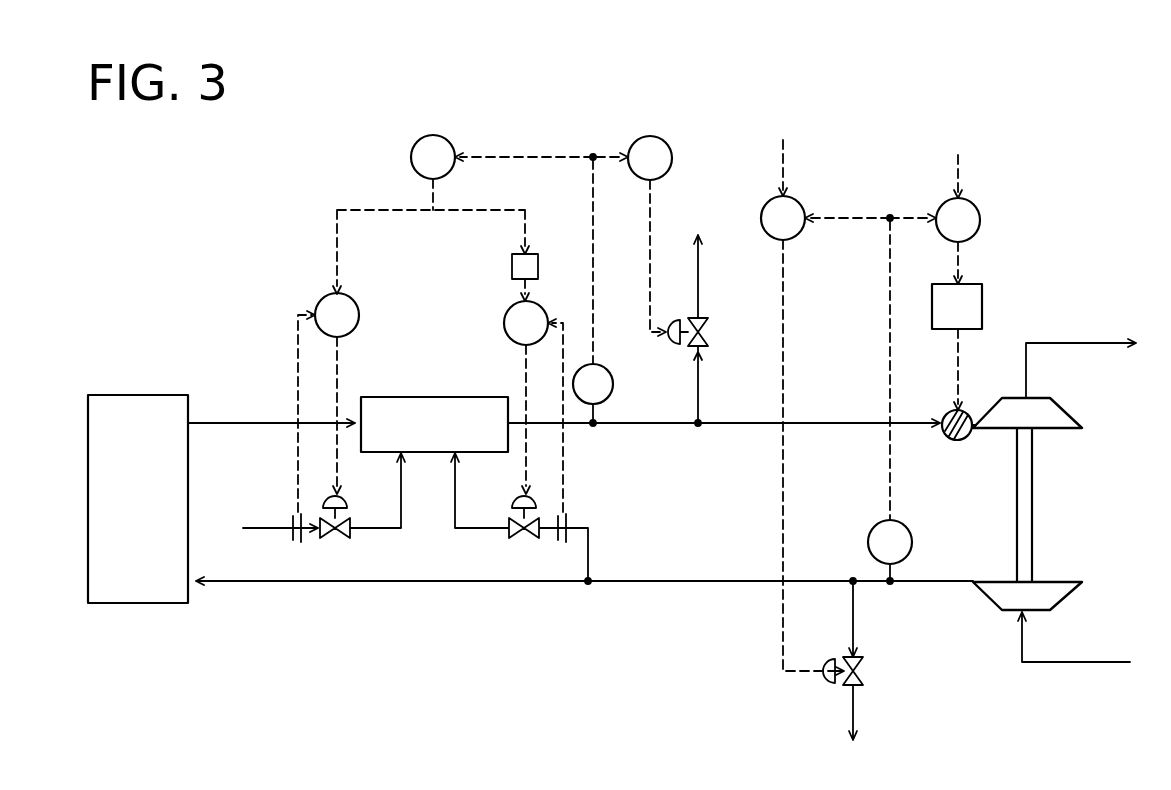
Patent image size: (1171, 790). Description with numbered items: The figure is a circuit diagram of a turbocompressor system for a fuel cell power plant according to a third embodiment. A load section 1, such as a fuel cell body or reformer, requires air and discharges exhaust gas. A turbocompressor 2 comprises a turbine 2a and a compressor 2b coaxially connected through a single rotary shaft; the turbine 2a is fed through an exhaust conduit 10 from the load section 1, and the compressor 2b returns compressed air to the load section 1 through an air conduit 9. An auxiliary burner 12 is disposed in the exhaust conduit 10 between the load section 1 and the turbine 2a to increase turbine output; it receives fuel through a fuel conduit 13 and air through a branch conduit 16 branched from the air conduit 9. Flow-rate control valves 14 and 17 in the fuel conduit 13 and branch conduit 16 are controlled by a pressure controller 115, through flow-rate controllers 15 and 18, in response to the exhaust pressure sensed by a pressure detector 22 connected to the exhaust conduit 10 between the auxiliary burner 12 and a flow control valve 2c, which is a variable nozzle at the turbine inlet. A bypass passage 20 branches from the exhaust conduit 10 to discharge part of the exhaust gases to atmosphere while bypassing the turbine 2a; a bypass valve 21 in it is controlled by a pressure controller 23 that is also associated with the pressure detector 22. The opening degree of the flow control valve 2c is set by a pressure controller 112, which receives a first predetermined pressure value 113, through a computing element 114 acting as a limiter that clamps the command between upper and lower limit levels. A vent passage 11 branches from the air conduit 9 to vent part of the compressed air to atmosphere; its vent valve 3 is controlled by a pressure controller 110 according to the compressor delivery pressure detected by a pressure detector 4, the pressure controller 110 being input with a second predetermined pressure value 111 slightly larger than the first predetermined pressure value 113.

The load section 1 is at (130, 604).
The turbocompressor 2 is at (1056, 510).
The turbine 2a is at (1068, 410).
The compressor 2b is at (1078, 591).
The flow control valve 2c is at (960, 441).
The vent valve 3 is at (866, 676).
The pressure detector 4 is at (912, 541).
The air conduit 9 is at (680, 584).
The exhaust conduit 10 is at (240, 422).
The vent passage 11 is at (856, 621).
The auxiliary burner 12 is at (437, 397).
The fuel conduit 13 is at (392, 531).
The flow-rate control valve 14 is at (335, 541).
The flow-rate controller 15 is at (359, 311).
The branch conduit 16 is at (465, 531).
The flow-rate control valve 17 is at (522, 541).
The flow-rate controller 18 is at (504, 323).
The bypass passage 20 is at (700, 375).
The bypass valve 21 is at (709, 332).
The pressure detector 22 is at (614, 384).
The pressure controller 23 is at (649, 136).
The pressure controller 110 is at (800, 203).
The second predetermined pressure value 111 is at (783, 160).
The pressure controller 112 is at (981, 218).
The first predetermined pressure value 113 is at (958, 170).
The computing element 114 is at (983, 290).
The pressure controller 115 is at (433, 135).